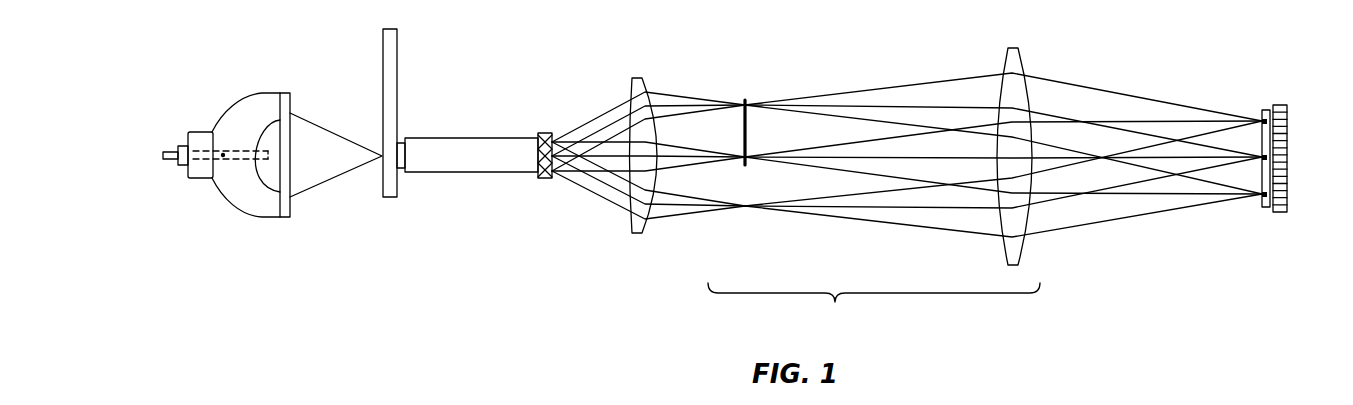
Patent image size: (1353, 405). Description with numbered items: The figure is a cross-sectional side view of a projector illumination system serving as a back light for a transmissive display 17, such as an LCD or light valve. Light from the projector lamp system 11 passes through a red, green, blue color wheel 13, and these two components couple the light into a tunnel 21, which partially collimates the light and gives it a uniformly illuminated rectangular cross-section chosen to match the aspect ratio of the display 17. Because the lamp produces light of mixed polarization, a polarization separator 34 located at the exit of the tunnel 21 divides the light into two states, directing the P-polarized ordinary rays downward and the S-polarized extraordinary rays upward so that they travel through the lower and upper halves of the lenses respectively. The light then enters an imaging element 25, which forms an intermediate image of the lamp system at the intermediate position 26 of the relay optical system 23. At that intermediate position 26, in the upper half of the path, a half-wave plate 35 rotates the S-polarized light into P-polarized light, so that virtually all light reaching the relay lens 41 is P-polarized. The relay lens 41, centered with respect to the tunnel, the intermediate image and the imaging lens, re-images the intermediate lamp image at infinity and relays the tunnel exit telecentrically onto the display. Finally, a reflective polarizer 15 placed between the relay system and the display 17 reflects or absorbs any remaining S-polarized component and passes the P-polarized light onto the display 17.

The lamp system 11 is at (253, 197).
The color wheel 13 is at (387, 198).
The tunnel 21 is at (457, 173).
The polarization separator 34 is at (548, 180).
The imaging element 25 is at (637, 235).
The half-wave plate 35 is at (742, 127).
The intermediate position 26 is at (747, 208).
The relay lens 41 is at (1020, 254).
The relay optical system 23 is at (874, 307).
The reflective polarizer 15 is at (1266, 210).
The transmissive display 17 is at (1288, 193).